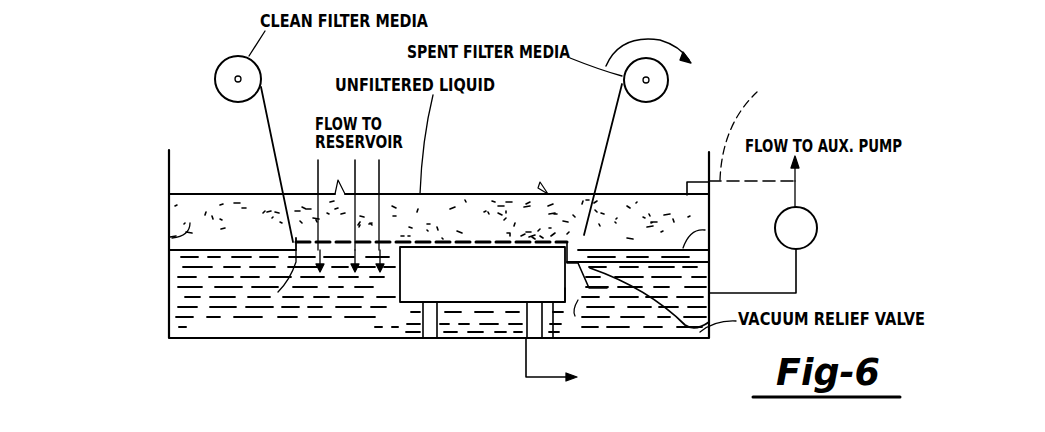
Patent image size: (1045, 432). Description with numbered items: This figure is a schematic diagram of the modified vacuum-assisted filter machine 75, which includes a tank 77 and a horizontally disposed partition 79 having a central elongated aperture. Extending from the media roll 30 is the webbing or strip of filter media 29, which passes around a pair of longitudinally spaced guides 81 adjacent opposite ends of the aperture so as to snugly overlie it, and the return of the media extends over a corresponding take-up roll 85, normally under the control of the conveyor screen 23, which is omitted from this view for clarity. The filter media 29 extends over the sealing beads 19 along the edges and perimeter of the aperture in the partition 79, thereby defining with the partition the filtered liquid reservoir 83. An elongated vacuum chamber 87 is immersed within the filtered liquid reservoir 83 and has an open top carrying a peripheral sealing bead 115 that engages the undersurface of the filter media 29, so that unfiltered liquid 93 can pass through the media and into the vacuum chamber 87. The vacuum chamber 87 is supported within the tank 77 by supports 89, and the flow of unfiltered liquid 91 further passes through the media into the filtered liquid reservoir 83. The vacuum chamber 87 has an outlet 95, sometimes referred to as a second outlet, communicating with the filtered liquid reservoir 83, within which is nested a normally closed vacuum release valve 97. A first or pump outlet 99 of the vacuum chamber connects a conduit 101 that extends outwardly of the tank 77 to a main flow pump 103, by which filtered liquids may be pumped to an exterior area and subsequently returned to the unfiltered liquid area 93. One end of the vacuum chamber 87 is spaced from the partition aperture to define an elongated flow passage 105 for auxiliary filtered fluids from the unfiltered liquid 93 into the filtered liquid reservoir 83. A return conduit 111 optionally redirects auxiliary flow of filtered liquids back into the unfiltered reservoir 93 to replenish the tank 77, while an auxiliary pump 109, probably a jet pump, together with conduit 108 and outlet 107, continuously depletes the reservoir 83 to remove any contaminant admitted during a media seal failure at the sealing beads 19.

The sealing beads 19 is at (296, 194).
The conveyor screen 23 is at (615, 230).
The filter media 29 is at (240, 195).
The media roll 30 is at (222, 70).
The modified vacuum-assisted filter machine 75 is at (166, 150).
The tank 77 is at (168, 285).
The partition 79 is at (172, 238).
The guides 81 is at (568, 176).
The filtered liquid reservoir 83 is at (180, 300).
The take-up roll 85 is at (664, 88).
The vacuum chamber 87 is at (400, 340).
The supports 89 is at (445, 345).
The flow of unfiltered liquid 91 is at (366, 201).
The unfiltered liquid 93 is at (185, 194).
The outlet 95 is at (601, 316).
The vacuum release valve 97 is at (638, 289).
The pump outlet 99 is at (516, 325).
The conduit 101 is at (522, 372).
The main flow pump 103 is at (667, 392).
The flow passage 105 is at (545, 195).
The outlet 107 is at (710, 293).
The conduit 108 is at (800, 262).
The auxiliary pump 109 is at (800, 227).
The return conduit 111 is at (759, 130).
The peripheral sealing bead 115 is at (393, 262).